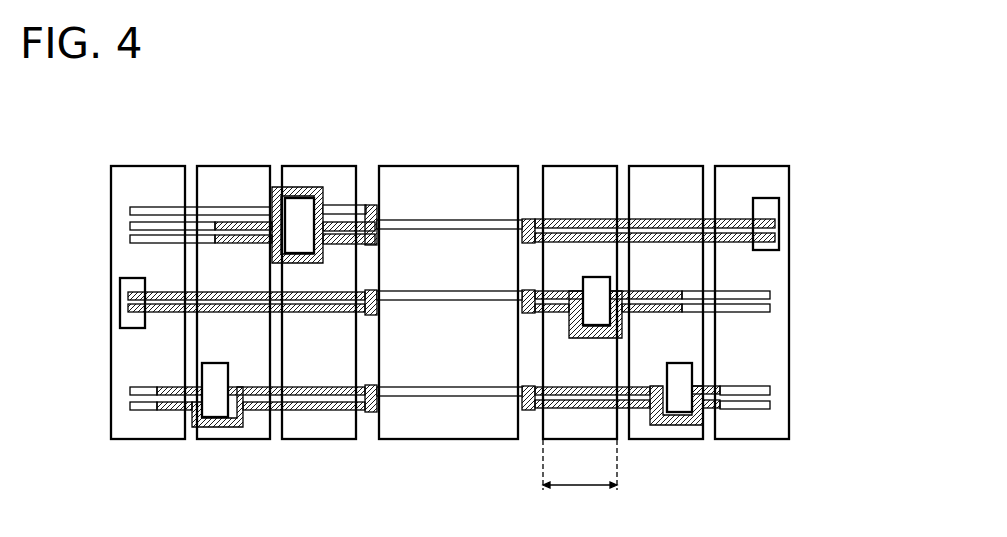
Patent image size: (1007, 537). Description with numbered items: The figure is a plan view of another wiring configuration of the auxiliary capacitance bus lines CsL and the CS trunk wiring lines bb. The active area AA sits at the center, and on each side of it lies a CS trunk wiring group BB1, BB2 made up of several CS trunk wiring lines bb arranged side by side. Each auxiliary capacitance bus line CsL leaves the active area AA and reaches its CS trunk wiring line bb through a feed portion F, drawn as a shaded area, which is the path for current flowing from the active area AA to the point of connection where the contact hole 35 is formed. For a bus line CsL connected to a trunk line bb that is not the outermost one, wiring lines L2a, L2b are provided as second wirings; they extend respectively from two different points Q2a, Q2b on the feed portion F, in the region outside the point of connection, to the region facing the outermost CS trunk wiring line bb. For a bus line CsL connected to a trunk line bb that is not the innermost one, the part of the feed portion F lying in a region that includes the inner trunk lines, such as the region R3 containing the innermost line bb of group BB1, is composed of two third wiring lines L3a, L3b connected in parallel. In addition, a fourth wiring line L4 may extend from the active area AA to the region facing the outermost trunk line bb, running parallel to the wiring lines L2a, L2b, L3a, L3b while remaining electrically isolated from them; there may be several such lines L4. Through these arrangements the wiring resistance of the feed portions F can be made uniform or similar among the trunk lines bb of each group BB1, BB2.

The CS trunk wiring line bb is at (138, 166).
The CS trunk wiring group BB1 is at (679, 108).
The CS trunk wiring group BB2 is at (243, 108).
The active area AA is at (434, 166).
The auxiliary capacitance bus line CsL is at (436, 220).
The wiring line (second wiring) L2a is at (130, 226).
The wiring line (second wiring) L2b is at (130, 239).
The wiring line (third wiring line) L3a is at (299, 293).
The wiring line (third wiring line) L3b is at (299, 312).
The wiring line (fourth wiring line) L4 is at (293, 186).
The point on feed portion Q2a is at (216, 222).
The point on feed portion Q2b is at (216, 243).
The contact hole 35 is at (322, 190).
The feed portion F is at (371, 205).
The region R3 is at (580, 477).